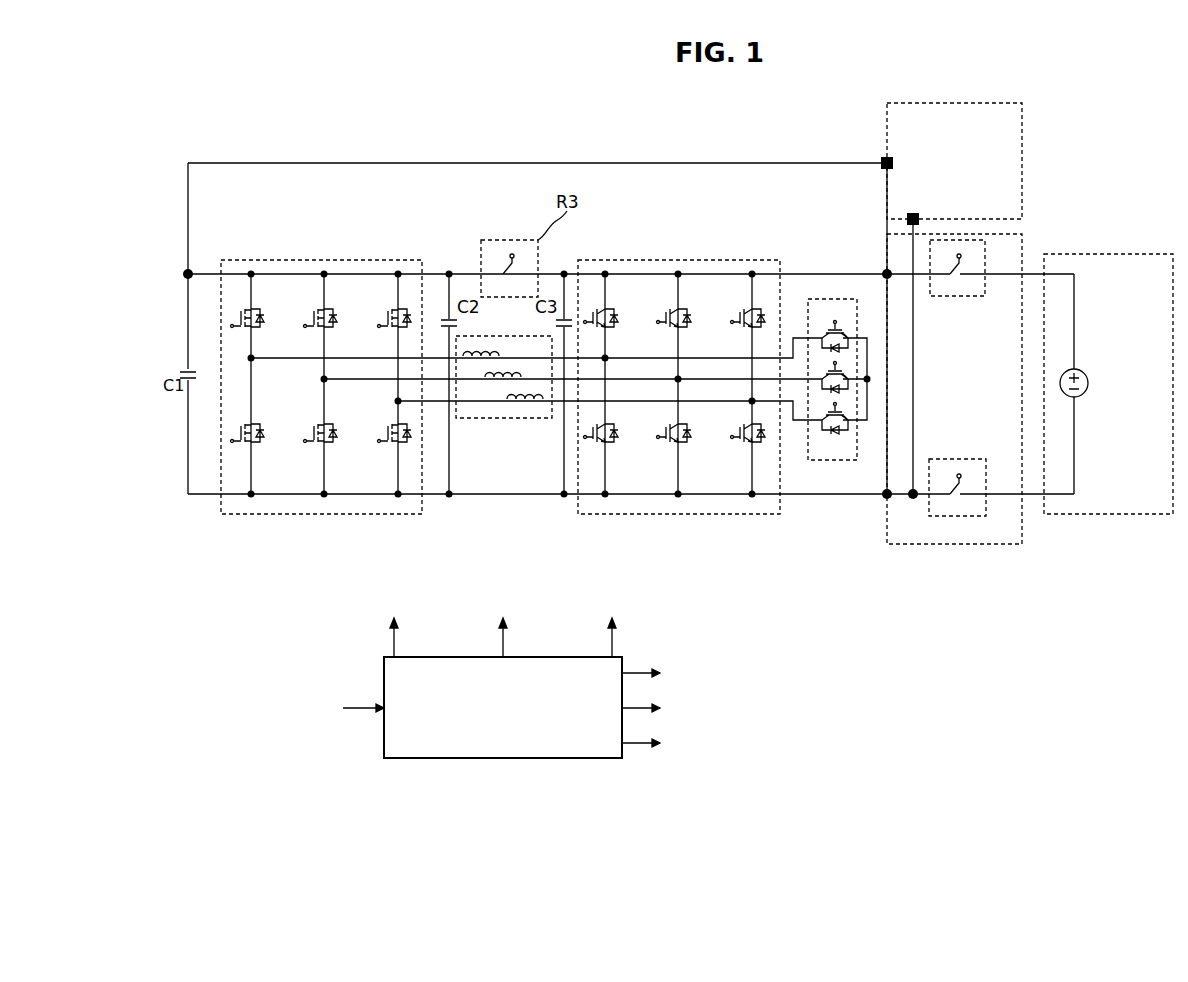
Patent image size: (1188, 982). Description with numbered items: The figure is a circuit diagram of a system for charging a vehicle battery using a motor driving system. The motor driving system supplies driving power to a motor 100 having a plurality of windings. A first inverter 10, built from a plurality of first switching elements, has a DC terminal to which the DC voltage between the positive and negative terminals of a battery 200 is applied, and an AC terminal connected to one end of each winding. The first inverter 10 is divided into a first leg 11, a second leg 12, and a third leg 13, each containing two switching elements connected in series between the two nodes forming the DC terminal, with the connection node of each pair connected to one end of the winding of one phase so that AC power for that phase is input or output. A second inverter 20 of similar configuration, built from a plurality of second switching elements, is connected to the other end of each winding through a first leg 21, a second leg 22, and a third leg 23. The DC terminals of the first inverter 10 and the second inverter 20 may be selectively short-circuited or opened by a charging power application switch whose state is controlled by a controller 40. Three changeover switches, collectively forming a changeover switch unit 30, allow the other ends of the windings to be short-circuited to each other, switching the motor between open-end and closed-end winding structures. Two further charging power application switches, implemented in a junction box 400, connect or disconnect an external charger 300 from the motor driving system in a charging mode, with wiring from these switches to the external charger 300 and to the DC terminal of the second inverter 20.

The first inverter 10 is at (328, 393).
The first leg 11 is at (251, 260).
The second leg 12 is at (324, 260).
The third leg 13 is at (398, 260).
The second inverter 20 is at (684, 393).
The first leg 21 is at (605, 260).
The second leg 22 is at (678, 260).
The third leg 23 is at (752, 260).
The changeover switch unit 30 is at (832, 460).
The controller 40 is at (502, 758).
The motor 100 is at (504, 418).
The battery 200 is at (1022, 163).
The external charger 300 is at (1107, 514).
The junction box 400 is at (962, 544).